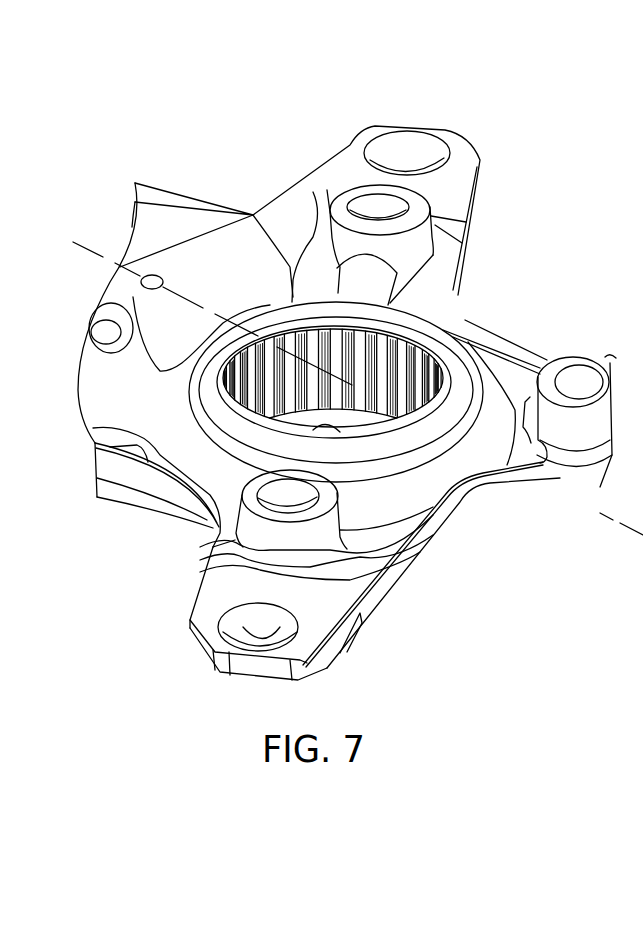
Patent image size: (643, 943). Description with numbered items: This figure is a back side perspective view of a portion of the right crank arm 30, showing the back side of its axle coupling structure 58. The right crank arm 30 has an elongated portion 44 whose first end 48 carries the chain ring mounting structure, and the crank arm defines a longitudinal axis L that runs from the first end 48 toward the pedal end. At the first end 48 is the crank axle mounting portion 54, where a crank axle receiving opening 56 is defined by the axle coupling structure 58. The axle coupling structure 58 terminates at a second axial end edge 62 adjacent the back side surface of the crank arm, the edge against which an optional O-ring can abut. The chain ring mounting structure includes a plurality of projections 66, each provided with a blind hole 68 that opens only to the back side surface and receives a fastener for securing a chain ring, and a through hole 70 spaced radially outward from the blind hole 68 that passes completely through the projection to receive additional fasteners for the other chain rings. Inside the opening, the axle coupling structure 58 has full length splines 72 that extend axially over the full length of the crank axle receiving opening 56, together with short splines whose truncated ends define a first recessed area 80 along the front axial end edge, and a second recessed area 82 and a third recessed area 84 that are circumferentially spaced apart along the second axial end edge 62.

The right crank arm 30 is at (162, 200).
The elongated portion 44 is at (153, 232).
The first end 48 is at (515, 496).
The crank axle mounting portion 54 is at (452, 460).
The crank axle receiving opening 56 is at (240, 389).
The axle coupling structure 58 is at (335, 400).
The second axial end edge 62 is at (436, 312).
The projections 66 is at (465, 242).
The blind holes 68 is at (363, 198).
The through holes 70 is at (407, 143).
The full length splines 72 is at (271, 326).
The first recessed area 80 is at (355, 405).
The second recessed area 82 is at (331, 333).
The third recessed area 84 is at (458, 338).
The longitudinal axis L is at (638, 530).